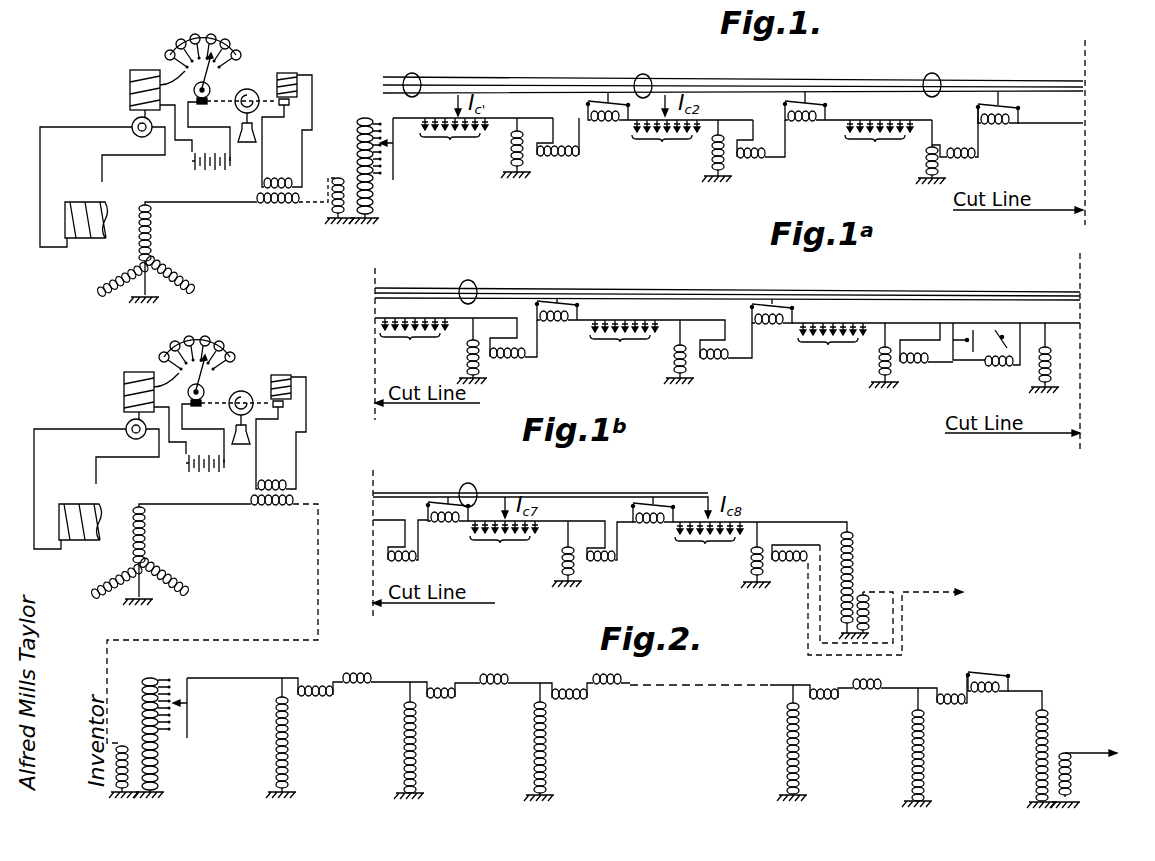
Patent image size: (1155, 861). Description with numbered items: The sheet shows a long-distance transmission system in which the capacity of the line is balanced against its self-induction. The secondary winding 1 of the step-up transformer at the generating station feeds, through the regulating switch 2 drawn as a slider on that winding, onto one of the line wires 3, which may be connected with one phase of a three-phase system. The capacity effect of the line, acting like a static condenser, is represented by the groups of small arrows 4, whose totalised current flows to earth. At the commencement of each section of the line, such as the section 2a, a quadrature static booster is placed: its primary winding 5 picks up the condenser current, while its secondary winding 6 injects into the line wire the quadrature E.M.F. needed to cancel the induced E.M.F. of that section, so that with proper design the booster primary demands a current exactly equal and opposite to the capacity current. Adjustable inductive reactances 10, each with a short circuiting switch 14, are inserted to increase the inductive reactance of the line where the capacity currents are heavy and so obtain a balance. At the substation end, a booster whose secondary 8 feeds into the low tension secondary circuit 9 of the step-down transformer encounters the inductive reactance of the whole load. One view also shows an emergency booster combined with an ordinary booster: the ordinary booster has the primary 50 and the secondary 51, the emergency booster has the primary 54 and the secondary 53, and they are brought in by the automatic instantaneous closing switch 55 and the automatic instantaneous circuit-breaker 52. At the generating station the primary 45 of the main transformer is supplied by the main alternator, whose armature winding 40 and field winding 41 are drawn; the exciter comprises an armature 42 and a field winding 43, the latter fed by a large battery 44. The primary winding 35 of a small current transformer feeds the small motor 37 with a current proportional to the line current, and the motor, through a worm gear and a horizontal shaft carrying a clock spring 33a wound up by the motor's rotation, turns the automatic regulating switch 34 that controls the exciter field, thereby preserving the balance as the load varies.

In FIG. 1, the secondary winding of the step-up transformer 1 is at (377, 200).
In FIG. 2, the secondary winding of the step-up transformer 1 is at (162, 762).
In FIG. 1, the regulating switch 2 is at (466, 149).
In FIG. 2, the regulating switch 2 is at (227, 708).
In FIG. 1, the line section 2a is at (740, 126).
In FIG. 1, the line wire 3 is at (580, 118).
In FIG. 1, the capacity effect arrows 4 is at (494, 120).
In FIG. 1A, the capacity effect arrows 4 is at (403, 338).
In FIG. 1B, the capacity effect arrows 4 is at (492, 546).
In FIG. 1, the primary winding of quadrature static booster 5 is at (512, 150).
In FIG. 1A, the primary winding of quadrature static booster 5 is at (468, 350).
In FIG. 1B, the primary winding of quadrature static booster 5 is at (563, 562).
In FIG. 2, the primary winding of quadrature static booster 5 is at (285, 756).
In FIG. 1, the secondary winding of quadrature static booster 6 is at (562, 160).
In FIG. 1A, the secondary winding of quadrature static booster 6 is at (514, 358).
In FIG. 1B, the secondary winding of quadrature static booster 6 is at (418, 559).
In FIG. 2, the secondary winding of quadrature static booster 6 is at (307, 700).
In FIG. 1B, the substation booster secondary 8 is at (790, 563).
In FIG. 1B, the low tension secondary circuit 9 is at (868, 595).
In FIG. 1, the adjustable inductive reactance 10 is at (609, 124).
In FIG. 1A, the adjustable inductive reactance 10 is at (557, 322).
In FIG. 1B, the adjustable inductive reactance 10 is at (447, 524).
In FIG. 2, the adjustable inductive reactance 10 is at (358, 686).
In FIG. 1, the short circuiting switch 14 is at (603, 79).
In FIG. 1A, the short circuiting switch 14 is at (558, 299).
In FIG. 1B, the short circuiting switch 14 is at (443, 492).
In FIG. 2, the short circuiting switch 14 is at (985, 672).
In FIG. 1, the clock spring 33a is at (249, 89).
In FIG. 2, the clock spring 33a is at (250, 389).
In FIG. 1, the automatic regulating switch 34 is at (184, 68).
In FIG. 2, the automatic regulating switch 34 is at (171, 371).
In FIG. 1, the primary winding of small current transformer 35 is at (277, 205).
In FIG. 2, the primary winding of small current transformer 35 is at (270, 523).
In FIG. 1, the small motor 37 is at (295, 73).
In FIG. 2, the small motor 37 is at (286, 419).
In FIG. 1, the armature winding of main alternator 40 is at (113, 288).
In FIG. 2, the armature winding of main alternator 40 is at (133, 569).
In FIG. 1, the field winding of main alternator 41 is at (78, 245).
In FIG. 2, the field winding of main alternator 41 is at (76, 547).
In FIG. 1, the exciter armature 42 is at (133, 122).
In FIG. 2, the exciter armature 42 is at (110, 435).
In FIG. 1, the exciter field winding 43 is at (130, 76).
In FIG. 2, the exciter field winding 43 is at (123, 395).
In FIG. 1, the battery 44 is at (195, 164).
In FIG. 2, the battery 44 is at (183, 482).
In FIG. 1, the primary of main transformer 45 is at (338, 213).
In FIG. 2, the primary of main transformer 45 is at (130, 744).
In FIG. 1A, the primary of ordinary booster 50 is at (880, 368).
In FIG. 1A, the secondary of ordinary booster 51 is at (920, 364).
In FIG. 1A, the automatic instantaneous circuit-breaker 52 is at (967, 360).
In FIG. 1A, the secondary of emergency booster 53 is at (1000, 373).
In FIG. 1A, the primary of emergency booster 54 is at (1053, 378).
In FIG. 1A, the automatic instantaneous closing switch 55 is at (1003, 337).